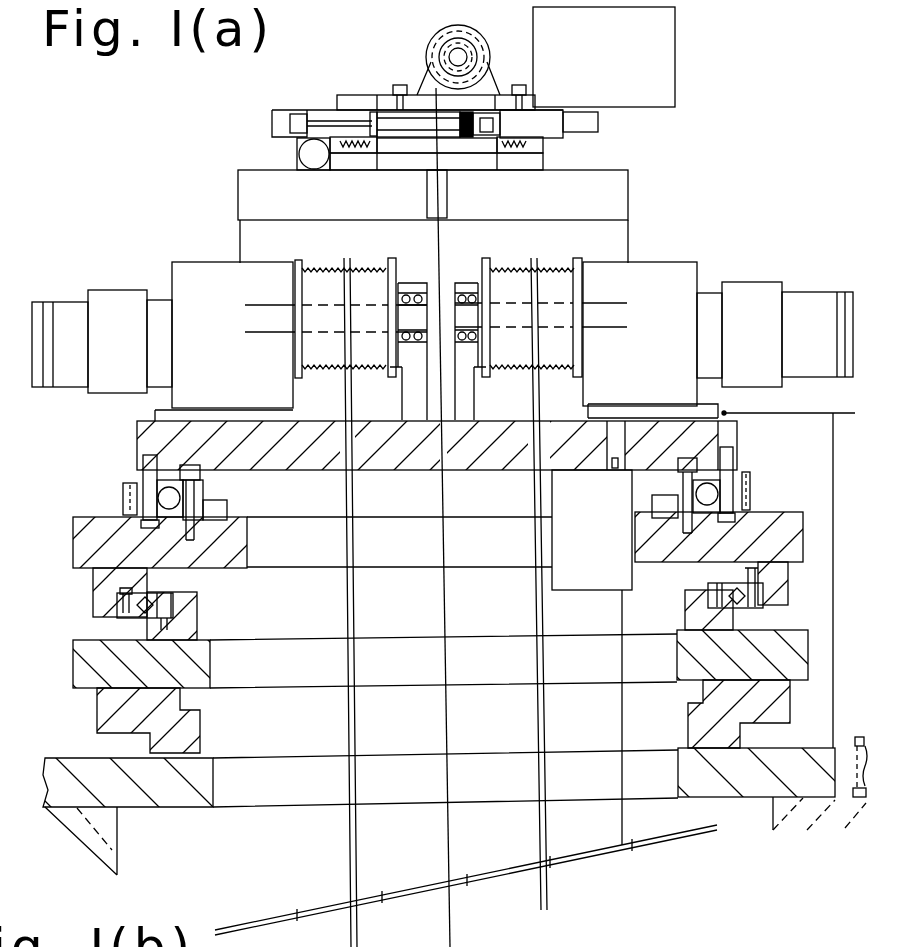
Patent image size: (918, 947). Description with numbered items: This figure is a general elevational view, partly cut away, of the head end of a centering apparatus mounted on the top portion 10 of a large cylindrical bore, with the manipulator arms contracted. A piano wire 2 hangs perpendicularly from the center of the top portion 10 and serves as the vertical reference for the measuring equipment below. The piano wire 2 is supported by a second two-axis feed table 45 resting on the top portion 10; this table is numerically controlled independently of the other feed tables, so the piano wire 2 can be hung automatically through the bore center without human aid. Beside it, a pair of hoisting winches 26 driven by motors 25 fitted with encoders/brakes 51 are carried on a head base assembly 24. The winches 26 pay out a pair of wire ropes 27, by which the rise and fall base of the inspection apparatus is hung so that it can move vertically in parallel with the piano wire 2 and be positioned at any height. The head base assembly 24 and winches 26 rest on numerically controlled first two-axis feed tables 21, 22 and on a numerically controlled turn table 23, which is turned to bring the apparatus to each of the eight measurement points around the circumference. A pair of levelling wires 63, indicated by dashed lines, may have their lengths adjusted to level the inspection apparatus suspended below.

The piano wire 2 is at (438, 243).
The top portion of the large cylindrical bore 10 is at (118, 850).
The first two-axis feed table 21 is at (75, 545).
The first two-axis feed table 22 is at (88, 640).
The numerically controlled turn table 23 is at (132, 486).
The head base assembly 24 is at (95, 778).
The motor 25 is at (126, 302).
The hoisting winch 26 is at (200, 284).
The wire rope 27 is at (352, 402).
The second two-axis feed table 45 is at (547, 163).
The encoder/brake 51 is at (64, 316).
The levelling wire 63 is at (532, 928).